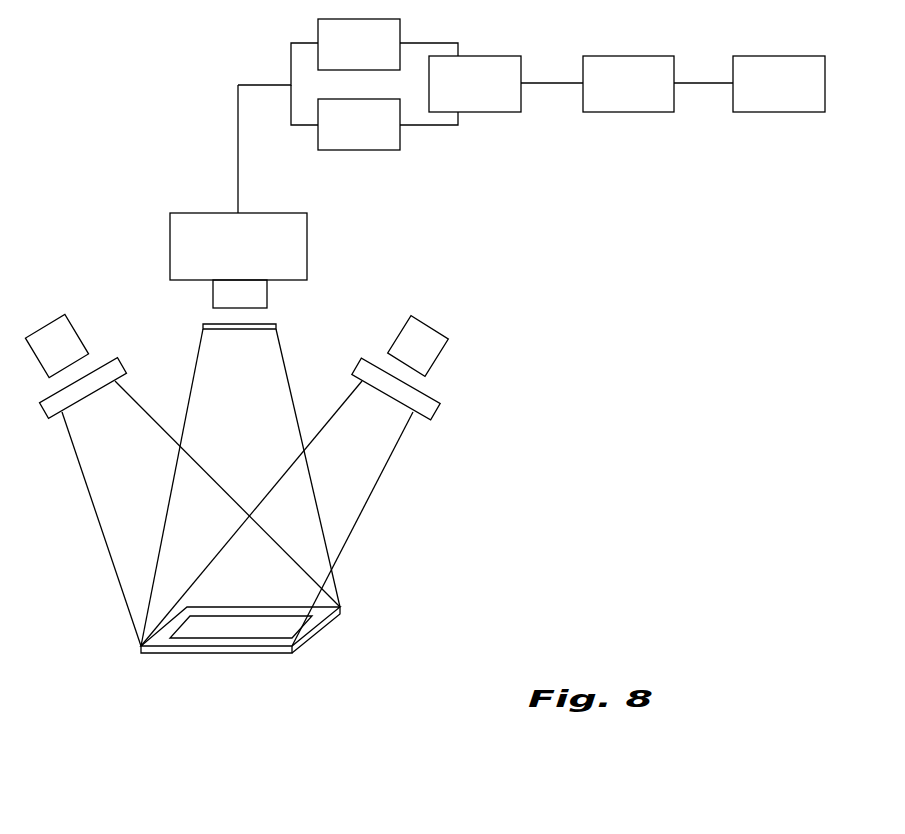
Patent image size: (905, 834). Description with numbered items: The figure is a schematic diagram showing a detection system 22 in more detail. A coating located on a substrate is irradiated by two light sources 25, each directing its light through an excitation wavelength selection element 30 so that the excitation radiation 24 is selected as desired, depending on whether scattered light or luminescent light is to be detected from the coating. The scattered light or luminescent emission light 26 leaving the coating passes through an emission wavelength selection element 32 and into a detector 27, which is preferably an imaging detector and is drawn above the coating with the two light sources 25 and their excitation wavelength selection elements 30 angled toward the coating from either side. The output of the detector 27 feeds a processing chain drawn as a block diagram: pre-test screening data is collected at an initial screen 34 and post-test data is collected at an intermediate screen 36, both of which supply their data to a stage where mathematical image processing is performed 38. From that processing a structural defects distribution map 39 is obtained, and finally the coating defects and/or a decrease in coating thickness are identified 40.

The detection system 22 is at (135, 138).
The excitation radiation 24 is at (135, 463).
The light source 25 is at (40, 325).
The scattered light or luminescent emission light 26 is at (242, 424).
The detector 27 is at (170, 246).
The excitation wavelength selection element 30 is at (124, 368).
The emission wavelength selection element 32 is at (277, 326).
The initial screen 34 is at (372, 57).
The intermediate screen 36 is at (372, 136).
The mathematical image processing 38 is at (488, 101).
The structural defects distribution map 39 is at (635, 98).
The identification of coating defects and/or decrease in coating thickness 40 is at (790, 98).